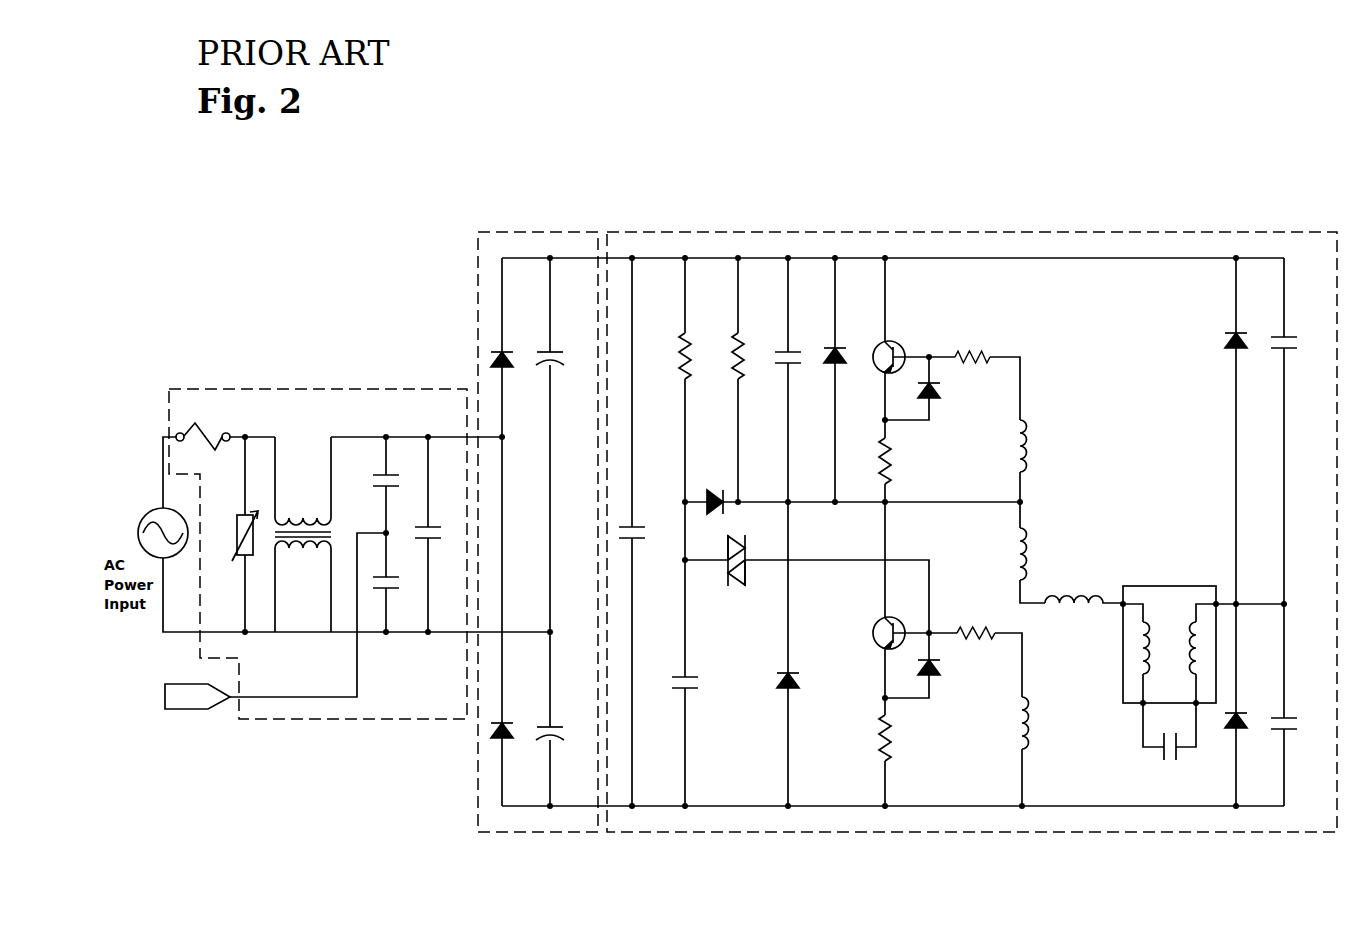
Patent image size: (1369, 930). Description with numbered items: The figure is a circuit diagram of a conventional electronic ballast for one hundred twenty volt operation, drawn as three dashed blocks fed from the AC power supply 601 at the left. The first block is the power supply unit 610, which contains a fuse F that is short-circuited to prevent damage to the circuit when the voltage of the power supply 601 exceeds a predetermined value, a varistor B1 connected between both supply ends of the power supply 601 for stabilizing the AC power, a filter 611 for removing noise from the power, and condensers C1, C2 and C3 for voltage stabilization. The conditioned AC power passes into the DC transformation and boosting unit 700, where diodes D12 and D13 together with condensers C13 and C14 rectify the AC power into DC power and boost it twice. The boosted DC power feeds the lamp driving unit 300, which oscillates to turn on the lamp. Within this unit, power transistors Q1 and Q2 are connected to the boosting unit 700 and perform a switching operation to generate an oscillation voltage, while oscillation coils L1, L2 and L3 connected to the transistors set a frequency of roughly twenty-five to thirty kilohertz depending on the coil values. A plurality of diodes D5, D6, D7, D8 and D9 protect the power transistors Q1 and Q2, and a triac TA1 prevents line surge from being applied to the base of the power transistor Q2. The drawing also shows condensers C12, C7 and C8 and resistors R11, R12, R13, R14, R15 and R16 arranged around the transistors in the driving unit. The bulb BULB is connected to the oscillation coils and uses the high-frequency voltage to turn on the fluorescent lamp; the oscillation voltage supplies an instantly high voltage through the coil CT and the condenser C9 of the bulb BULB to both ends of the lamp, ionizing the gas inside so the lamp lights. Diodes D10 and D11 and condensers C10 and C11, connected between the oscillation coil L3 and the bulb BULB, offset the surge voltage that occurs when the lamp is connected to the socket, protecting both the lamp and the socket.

The lamp driving unit 300 is at (995, 232).
The DC transformation and boosting unit 700 is at (531, 232).
The power supply unit 610 is at (321, 389).
The filter 611 is at (300, 510).
The power supply 601 is at (152, 520).
The fuse F is at (203, 426).
The varistor B1 is at (234, 534).
The condenser C1 is at (395, 485).
The condenser C2 is at (395, 582).
The condenser C3 is at (436, 534).
The diode D12 is at (515, 347).
The diode D13 is at (515, 720).
The condenser C13 is at (562, 445).
The condenser C14 is at (562, 719).
The condenser C12 is at (646, 532).
The resistor R11 is at (702, 380).
The resistor R12 is at (756, 380).
The condenser C8 is at (795, 380).
The diode D6 is at (845, 380).
The diode D5 is at (714, 492).
The triac TA1 is at (735, 573).
The condenser C7 is at (698, 683).
The diode D7 is at (804, 654).
The power transistor Q1 is at (901, 339).
The power transistor Q2 is at (901, 600).
The resistor R13 is at (904, 461).
The resistor R14 is at (974, 374).
The resistor R15 is at (905, 752).
The resistor R16 is at (975, 651).
The diode D8 is at (927, 388).
The diode D9 is at (927, 665).
The oscillation coil L1 is at (1038, 461).
The oscillation coil L2 is at (1038, 552).
The oscillation coil L3 is at (1039, 751).
The coil CT is at (1084, 587).
The bulb BULB is at (1170, 592).
The condenser C9 is at (1169, 743).
The diode D10 is at (1250, 330).
The diode D11 is at (1250, 709).
The condenser C10 is at (1297, 705).
The condenser C11 is at (1297, 431).